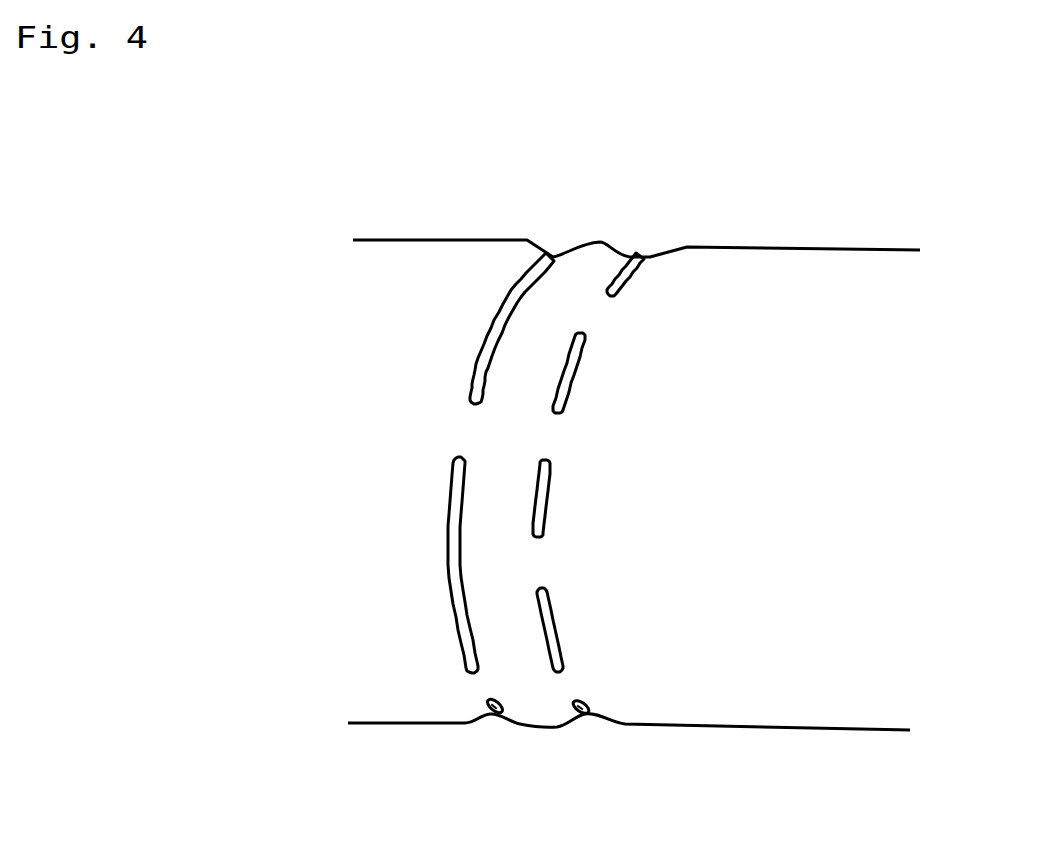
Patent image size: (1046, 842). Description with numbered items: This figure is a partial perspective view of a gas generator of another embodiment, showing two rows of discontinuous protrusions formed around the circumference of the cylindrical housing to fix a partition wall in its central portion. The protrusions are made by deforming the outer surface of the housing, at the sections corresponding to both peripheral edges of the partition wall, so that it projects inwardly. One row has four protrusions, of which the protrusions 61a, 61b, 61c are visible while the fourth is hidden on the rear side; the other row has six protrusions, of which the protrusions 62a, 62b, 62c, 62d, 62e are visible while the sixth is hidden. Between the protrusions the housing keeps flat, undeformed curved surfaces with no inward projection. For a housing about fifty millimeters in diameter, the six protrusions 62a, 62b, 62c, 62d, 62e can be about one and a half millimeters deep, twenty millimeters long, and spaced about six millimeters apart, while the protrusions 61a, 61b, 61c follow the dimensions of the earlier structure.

The protrusion 61a is at (506, 310).
The protrusion 61b is at (456, 565).
The protrusion 61c is at (485, 713).
The protrusion 62a is at (633, 258).
The protrusion 62b is at (568, 365).
The protrusion 62c is at (540, 500).
The protrusion 62d is at (548, 633).
The protrusion 62e is at (586, 712).